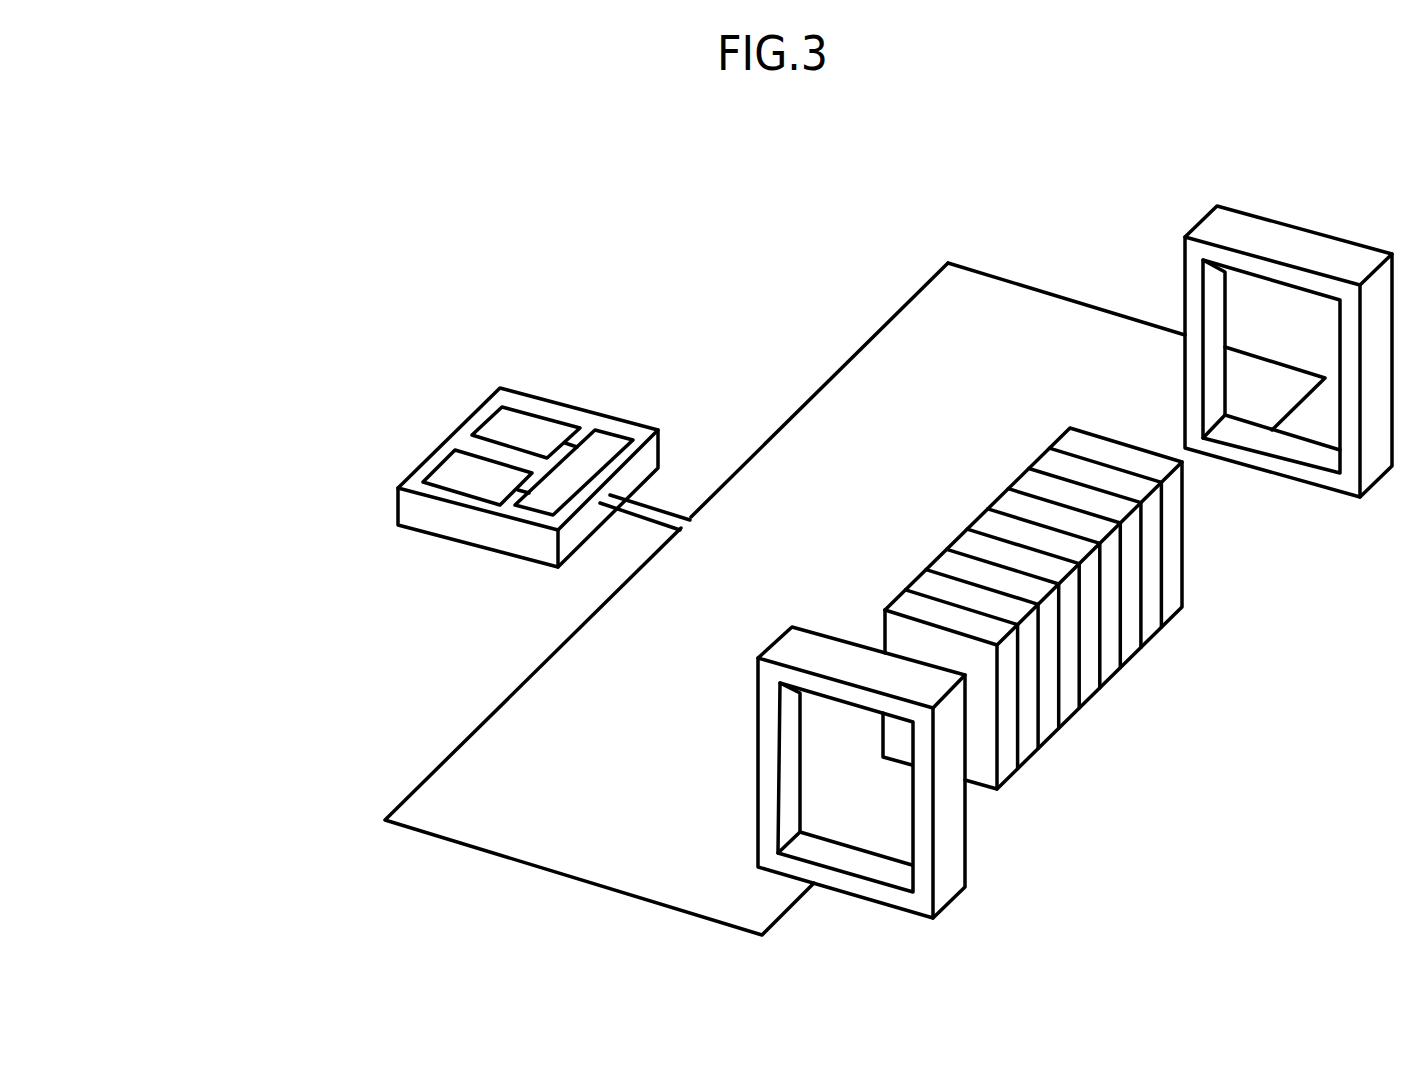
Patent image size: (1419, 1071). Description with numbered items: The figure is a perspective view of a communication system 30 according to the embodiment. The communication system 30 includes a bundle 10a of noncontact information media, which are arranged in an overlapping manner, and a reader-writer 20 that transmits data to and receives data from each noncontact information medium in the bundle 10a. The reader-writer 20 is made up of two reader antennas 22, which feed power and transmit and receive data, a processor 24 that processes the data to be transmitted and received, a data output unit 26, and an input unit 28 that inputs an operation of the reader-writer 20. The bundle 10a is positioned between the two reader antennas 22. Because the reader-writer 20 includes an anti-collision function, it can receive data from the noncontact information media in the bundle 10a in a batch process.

The communication system 30 is at (1159, 145).
The reader-writer 20 is at (178, 627).
The processor 24 is at (611, 446).
The input unit 28 is at (483, 433).
The data output unit 26 is at (440, 477).
The reader antenna 22 is at (785, 648).
The bundle 10a is at (1002, 585).